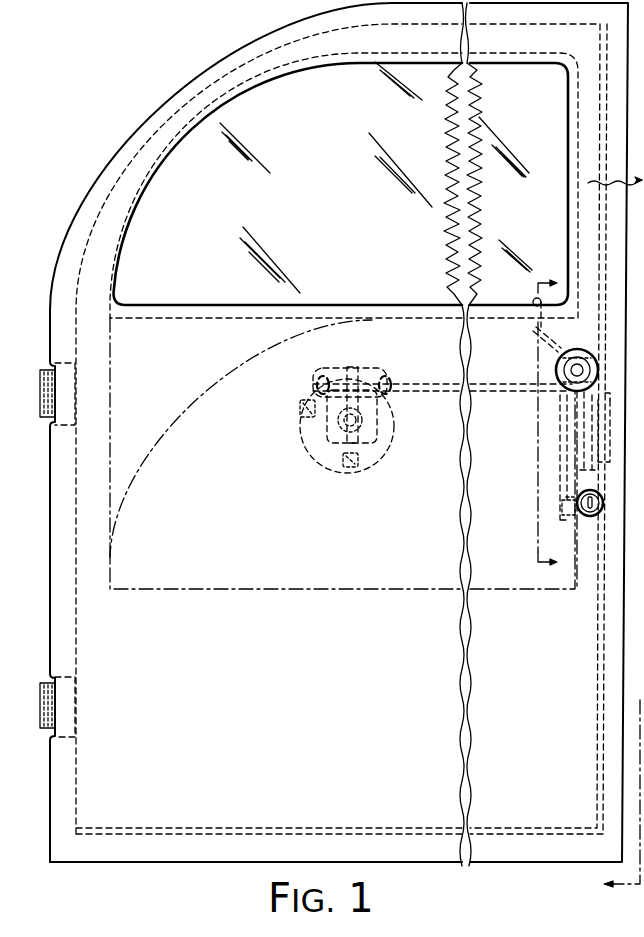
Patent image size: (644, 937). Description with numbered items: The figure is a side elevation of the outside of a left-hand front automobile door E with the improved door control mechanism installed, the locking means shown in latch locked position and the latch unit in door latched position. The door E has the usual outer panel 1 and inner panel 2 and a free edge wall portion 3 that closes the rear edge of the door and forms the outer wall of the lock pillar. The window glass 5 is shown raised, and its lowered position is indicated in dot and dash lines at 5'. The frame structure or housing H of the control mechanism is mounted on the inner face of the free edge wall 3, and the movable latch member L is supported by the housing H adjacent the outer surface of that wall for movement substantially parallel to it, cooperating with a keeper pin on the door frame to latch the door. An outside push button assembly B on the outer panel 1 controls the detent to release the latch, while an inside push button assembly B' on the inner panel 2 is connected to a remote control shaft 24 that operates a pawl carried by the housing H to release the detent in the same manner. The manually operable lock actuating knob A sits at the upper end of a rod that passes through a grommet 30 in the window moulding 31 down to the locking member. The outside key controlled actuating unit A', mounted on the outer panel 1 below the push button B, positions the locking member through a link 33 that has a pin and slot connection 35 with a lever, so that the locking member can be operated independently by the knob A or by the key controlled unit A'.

The door E is at (163, 105).
The outer panel 1 is at (267, 710).
The window glass 5 is at (344, 185).
The lowered position of window glass 5' is at (342, 469).
The window moulding 31 is at (490, 305).
The free edge wall portion 3 is at (534, 427).
The grommet 30 is at (558, 302).
The lock actuating knob A is at (534, 327).
The push button assembly B is at (577, 353).
The remote control shaft 24 is at (435, 384).
The push button assembly B' is at (331, 420).
The frame structure or housing H is at (574, 447).
The latch member L is at (610, 461).
The link 33 is at (570, 474).
The pin and slot connection 35 is at (568, 505).
The key controlled actuating unit A' is at (575, 522).
The inner panel 2 is at (610, 801).